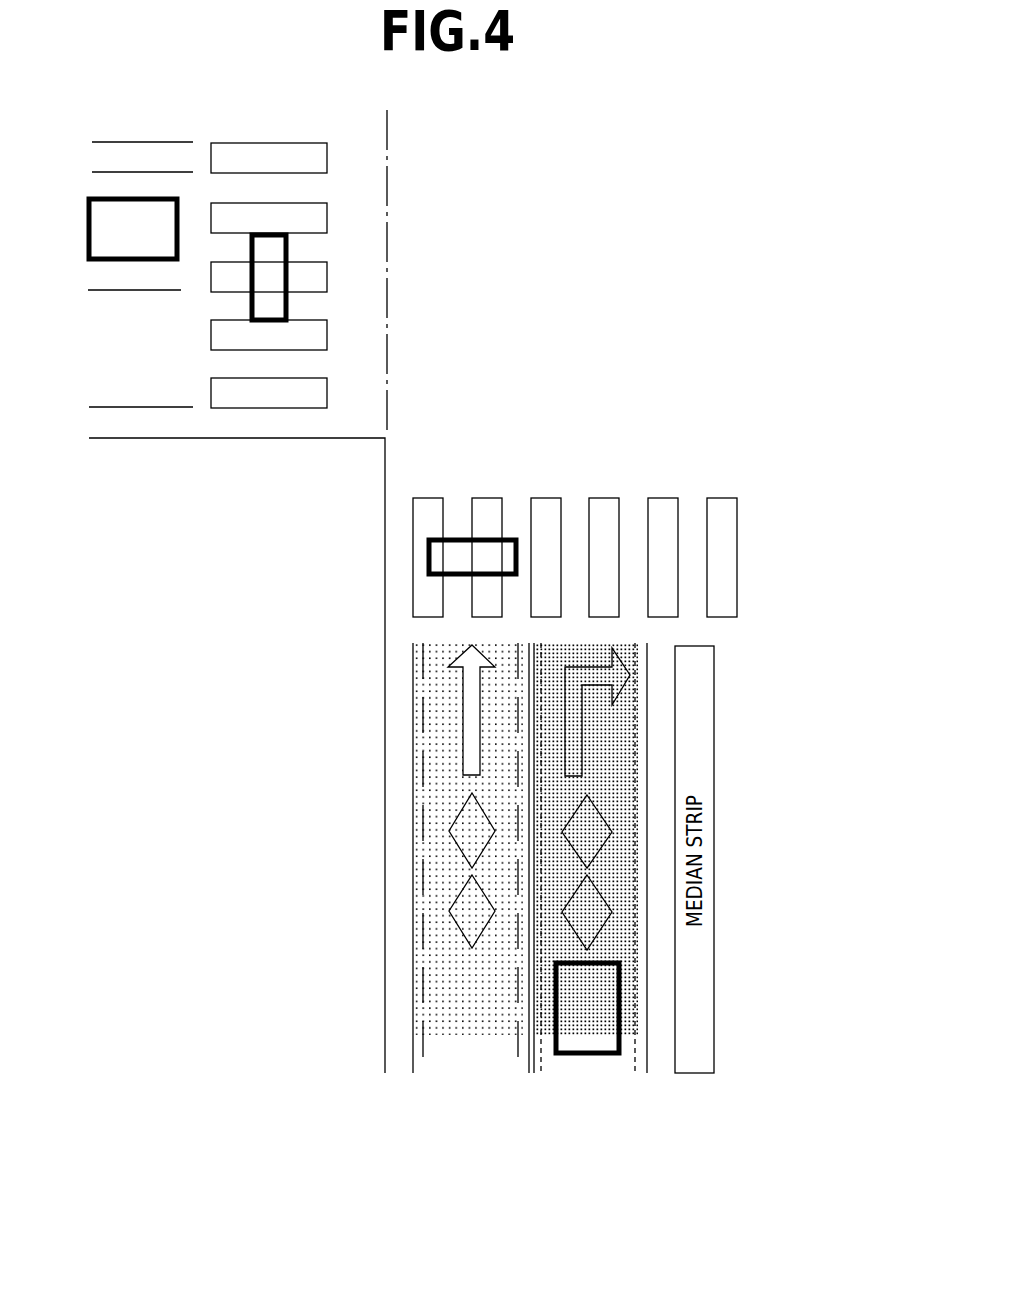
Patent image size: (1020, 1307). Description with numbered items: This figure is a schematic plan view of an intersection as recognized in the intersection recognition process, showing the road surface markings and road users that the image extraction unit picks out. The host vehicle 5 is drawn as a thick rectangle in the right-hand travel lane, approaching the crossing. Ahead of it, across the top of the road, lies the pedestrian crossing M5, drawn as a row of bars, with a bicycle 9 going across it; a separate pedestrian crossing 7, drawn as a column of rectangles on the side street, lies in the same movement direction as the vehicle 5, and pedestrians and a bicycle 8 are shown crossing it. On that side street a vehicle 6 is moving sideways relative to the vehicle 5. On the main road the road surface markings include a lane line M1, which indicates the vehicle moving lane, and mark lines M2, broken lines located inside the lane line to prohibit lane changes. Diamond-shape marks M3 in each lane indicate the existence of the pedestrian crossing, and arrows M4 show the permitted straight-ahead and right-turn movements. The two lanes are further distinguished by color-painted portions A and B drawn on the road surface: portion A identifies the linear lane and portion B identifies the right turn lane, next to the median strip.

The vehicle 5 is at (585, 1060).
The vehicle 6 is at (137, 197).
The pedestrian crossing 7 is at (268, 147).
The bicycle 8 is at (286, 250).
The bicycle 9 is at (452, 540).
The lane line M1 is at (537, 1067).
The mark lines M2 is at (517, 1058).
The diamond-shape marks M3 is at (455, 935).
The arrows M4 is at (467, 687).
The pedestrian crossing M5 is at (722, 563).
The color-painted portion A is at (442, 733).
The color-painted portion B is at (613, 953).